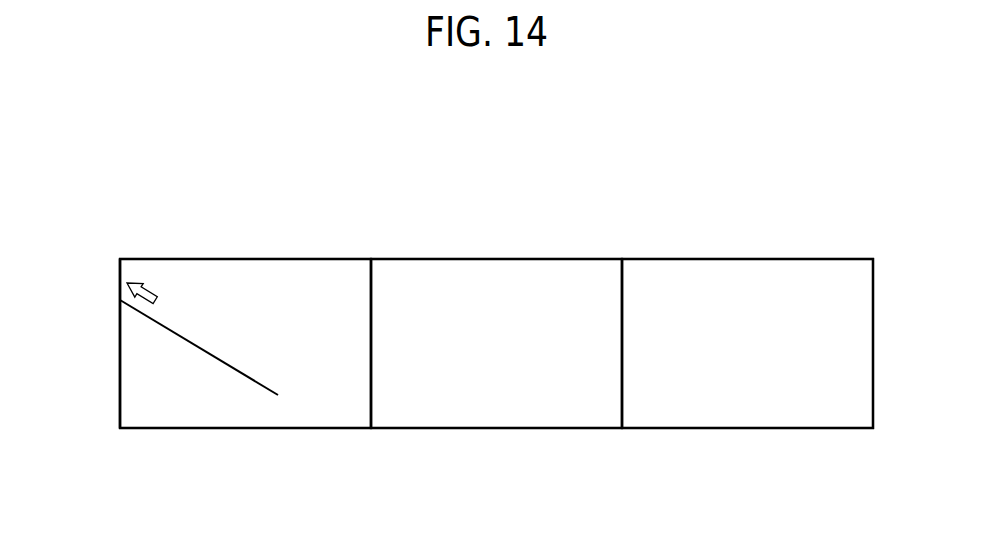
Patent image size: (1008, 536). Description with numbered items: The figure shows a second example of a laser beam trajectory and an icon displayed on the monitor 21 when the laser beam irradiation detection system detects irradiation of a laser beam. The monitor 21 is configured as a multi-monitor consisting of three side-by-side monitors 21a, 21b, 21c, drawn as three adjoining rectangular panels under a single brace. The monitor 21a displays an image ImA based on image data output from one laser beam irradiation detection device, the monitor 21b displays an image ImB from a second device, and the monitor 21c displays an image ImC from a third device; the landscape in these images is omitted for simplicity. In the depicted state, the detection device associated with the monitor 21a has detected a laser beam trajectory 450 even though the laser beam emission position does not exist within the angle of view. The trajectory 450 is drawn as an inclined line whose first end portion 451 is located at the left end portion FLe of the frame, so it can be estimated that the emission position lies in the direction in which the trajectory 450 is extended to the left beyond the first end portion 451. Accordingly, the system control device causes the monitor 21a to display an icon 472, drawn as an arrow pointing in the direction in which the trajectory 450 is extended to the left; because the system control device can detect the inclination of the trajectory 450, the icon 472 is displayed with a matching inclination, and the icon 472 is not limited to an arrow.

The monitor 21 is at (882, 212).
The monitor 21a is at (262, 259).
The monitor 21b is at (512, 259).
The monitor 21c is at (762, 259).
The laser beam trajectory 450 is at (214, 355).
The first end portion 451 is at (120, 302).
The icon 472 is at (178, 288).
The left end portion of the frame FLe is at (119, 289).
The image ImA is at (248, 417).
The image ImB is at (502, 417).
The image ImC is at (752, 417).